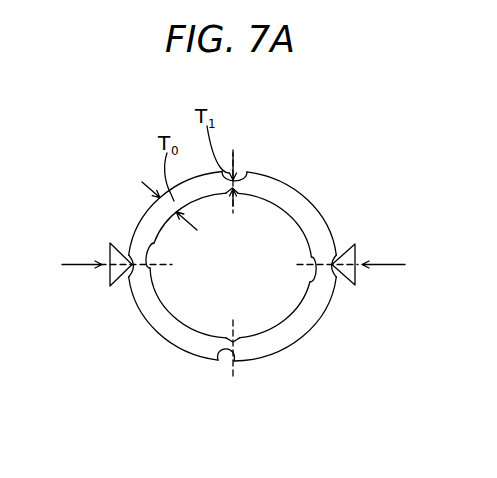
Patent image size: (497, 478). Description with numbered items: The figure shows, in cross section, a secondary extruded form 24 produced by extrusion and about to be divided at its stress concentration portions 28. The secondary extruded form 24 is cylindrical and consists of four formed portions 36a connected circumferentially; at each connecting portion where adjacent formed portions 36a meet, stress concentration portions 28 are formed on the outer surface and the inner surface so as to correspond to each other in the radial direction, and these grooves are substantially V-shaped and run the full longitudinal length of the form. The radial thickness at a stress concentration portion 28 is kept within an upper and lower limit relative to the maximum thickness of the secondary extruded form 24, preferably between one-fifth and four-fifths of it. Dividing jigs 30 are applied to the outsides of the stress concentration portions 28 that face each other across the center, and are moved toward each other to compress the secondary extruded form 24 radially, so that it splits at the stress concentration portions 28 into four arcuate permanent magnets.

The secondary extruded form 24 is at (277, 364).
The stress concentration portion 28 is at (250, 174).
The dividing jig 30 is at (109, 256).
The formed portion 36a is at (142, 221).